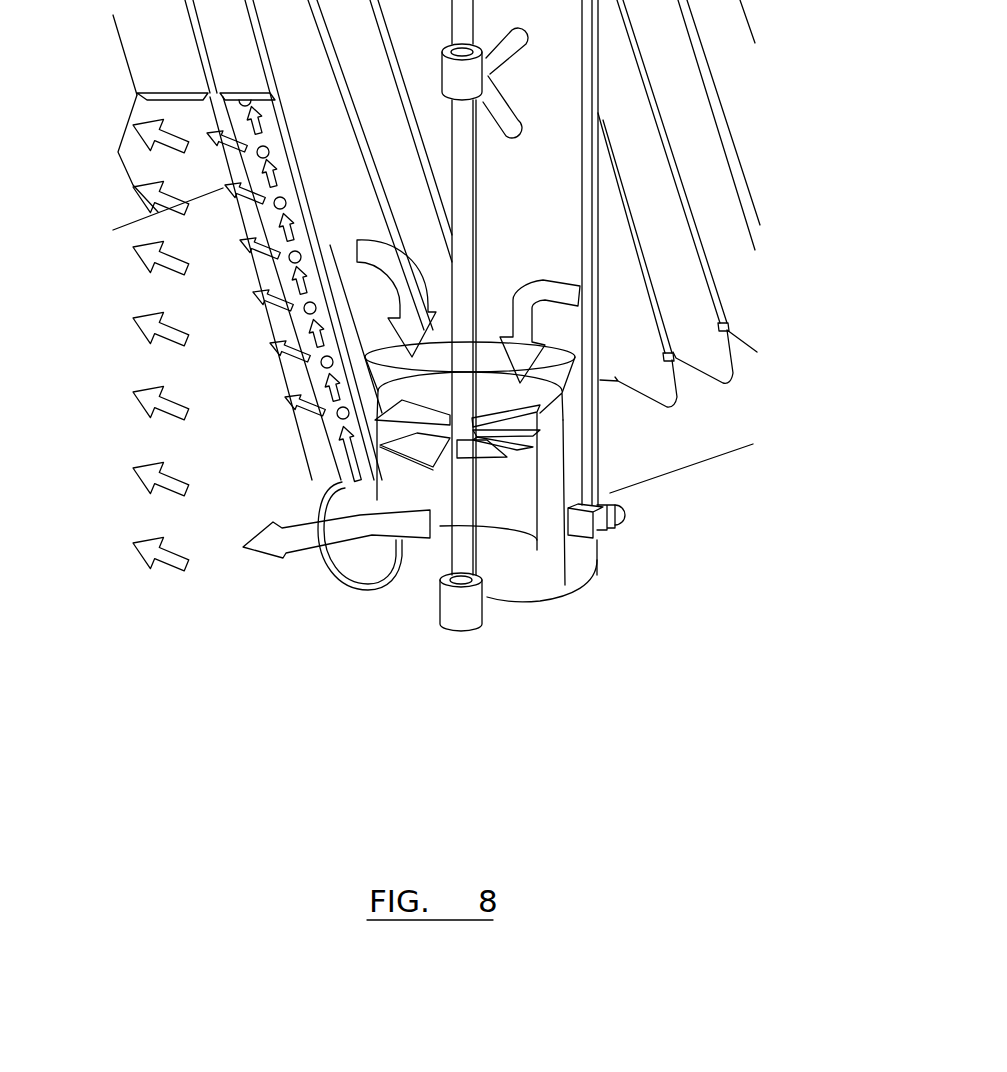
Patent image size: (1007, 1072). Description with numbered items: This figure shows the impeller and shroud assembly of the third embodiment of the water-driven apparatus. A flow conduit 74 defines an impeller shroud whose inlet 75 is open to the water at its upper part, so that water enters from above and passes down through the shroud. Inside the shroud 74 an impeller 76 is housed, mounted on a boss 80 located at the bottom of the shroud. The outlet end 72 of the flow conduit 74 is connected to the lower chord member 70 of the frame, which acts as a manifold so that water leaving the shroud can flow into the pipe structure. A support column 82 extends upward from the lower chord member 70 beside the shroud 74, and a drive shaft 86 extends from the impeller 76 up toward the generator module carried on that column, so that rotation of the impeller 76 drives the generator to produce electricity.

The lower chord member 70 is at (333, 580).
The outlet end 72 is at (432, 547).
The flow conduit 74 is at (550, 530).
The inlet 75 is at (557, 367).
The impeller 76 is at (417, 440).
The boss 80 is at (463, 613).
The support column 82 is at (540, 237).
The drive shaft 86 is at (465, 183).